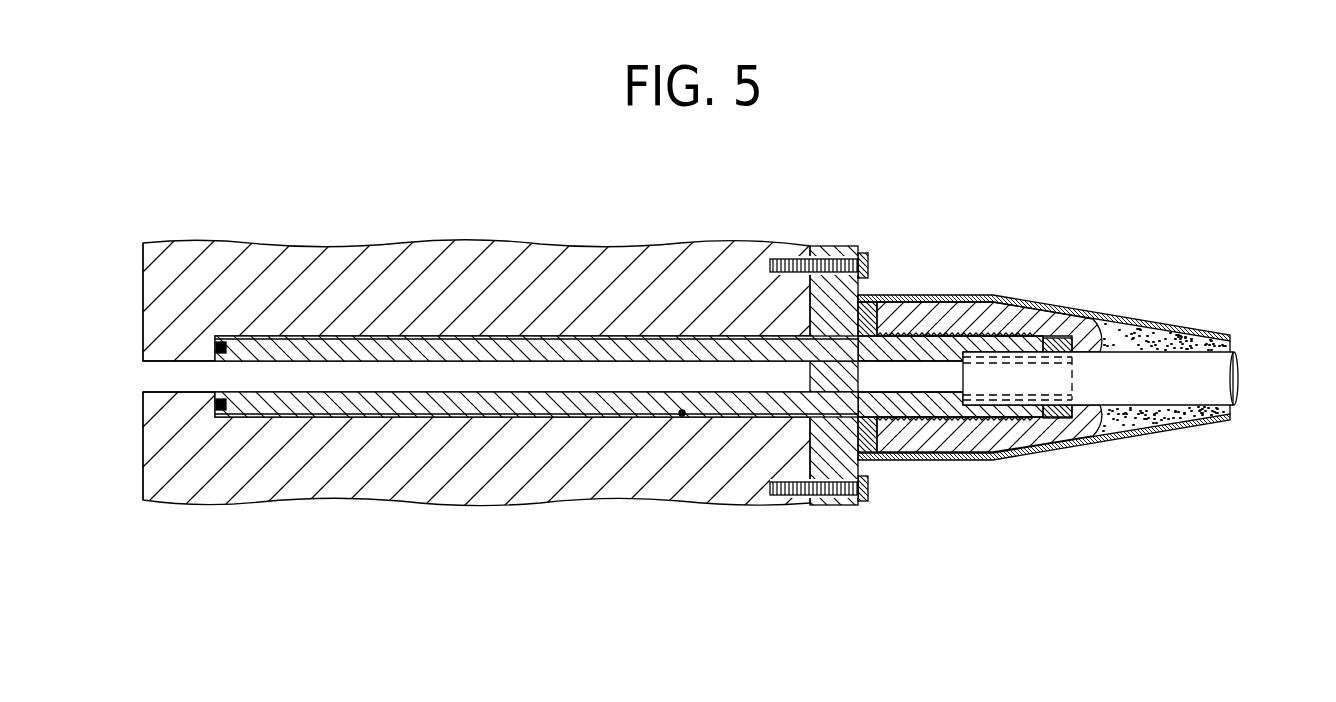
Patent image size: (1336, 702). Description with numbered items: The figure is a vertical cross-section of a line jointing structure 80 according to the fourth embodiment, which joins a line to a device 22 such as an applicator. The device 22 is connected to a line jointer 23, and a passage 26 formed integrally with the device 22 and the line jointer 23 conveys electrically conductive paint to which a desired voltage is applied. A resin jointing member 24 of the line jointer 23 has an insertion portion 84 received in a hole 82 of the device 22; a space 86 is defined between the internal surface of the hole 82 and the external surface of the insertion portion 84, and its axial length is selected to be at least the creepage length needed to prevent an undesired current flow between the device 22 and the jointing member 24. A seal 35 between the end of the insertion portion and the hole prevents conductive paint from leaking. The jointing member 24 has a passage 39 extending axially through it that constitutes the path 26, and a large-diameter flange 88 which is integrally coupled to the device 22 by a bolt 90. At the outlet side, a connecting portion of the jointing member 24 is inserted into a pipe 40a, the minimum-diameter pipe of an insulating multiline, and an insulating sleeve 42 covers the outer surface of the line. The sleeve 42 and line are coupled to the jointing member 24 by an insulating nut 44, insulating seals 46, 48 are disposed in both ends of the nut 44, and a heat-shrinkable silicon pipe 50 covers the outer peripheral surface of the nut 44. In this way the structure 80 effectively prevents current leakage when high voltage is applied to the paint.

The device 22 is at (657, 246).
The line jointer 23 is at (958, 464).
The jointing member 24 is at (917, 334).
The passage 26 is at (172, 364).
The seal 35 is at (218, 410).
The passage 39 is at (307, 373).
The pipe 40a is at (1223, 371).
The insulating sleeve 42 is at (1044, 420).
The insulating nut 44 is at (981, 437).
The insulating seal 46 is at (1157, 414).
The insulating seal 48 is at (867, 301).
The pipe 50 is at (1152, 321).
The line jointing structure 80 is at (1048, 346).
The hole 82 is at (682, 416).
The insertion portion 84 is at (548, 353).
The space 86 is at (368, 418).
The large-diameter flange 88 is at (834, 250).
The bolt 90 is at (862, 257).